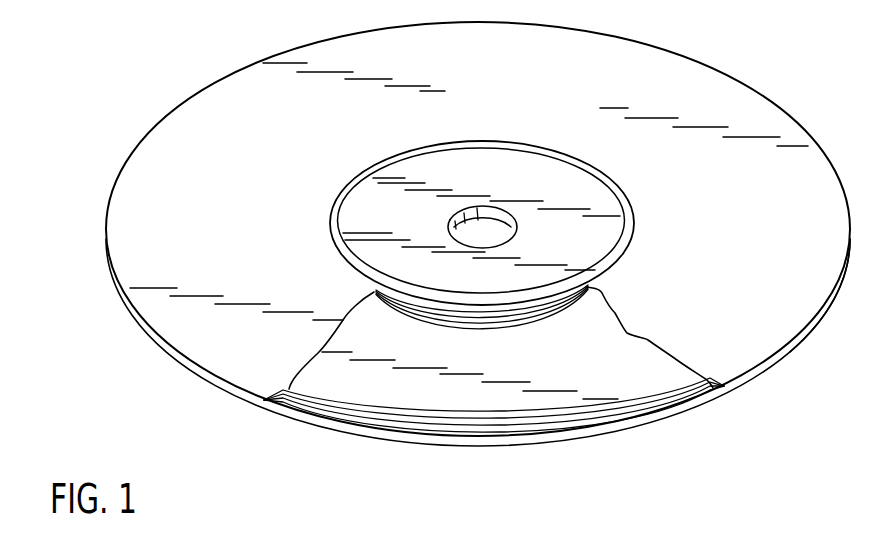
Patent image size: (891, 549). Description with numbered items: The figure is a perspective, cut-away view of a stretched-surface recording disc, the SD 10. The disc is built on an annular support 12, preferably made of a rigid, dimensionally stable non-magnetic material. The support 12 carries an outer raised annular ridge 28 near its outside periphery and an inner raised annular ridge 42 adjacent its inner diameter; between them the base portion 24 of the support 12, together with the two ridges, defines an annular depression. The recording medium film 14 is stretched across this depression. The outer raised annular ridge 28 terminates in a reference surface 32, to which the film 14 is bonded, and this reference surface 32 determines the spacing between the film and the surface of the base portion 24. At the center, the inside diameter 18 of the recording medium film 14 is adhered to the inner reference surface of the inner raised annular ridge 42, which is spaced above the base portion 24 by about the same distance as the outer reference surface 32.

The SD 10 is at (842, 170).
The annular support 12 is at (782, 352).
The recording medium film 14 is at (733, 107).
The inside diameter of the recording medium film 18 is at (556, 158).
The base portion 24 is at (340, 392).
The outer raised annular ridge 28 is at (647, 403).
The reference surface 32 is at (550, 430).
The inner raised annular ridge 42 is at (562, 305).